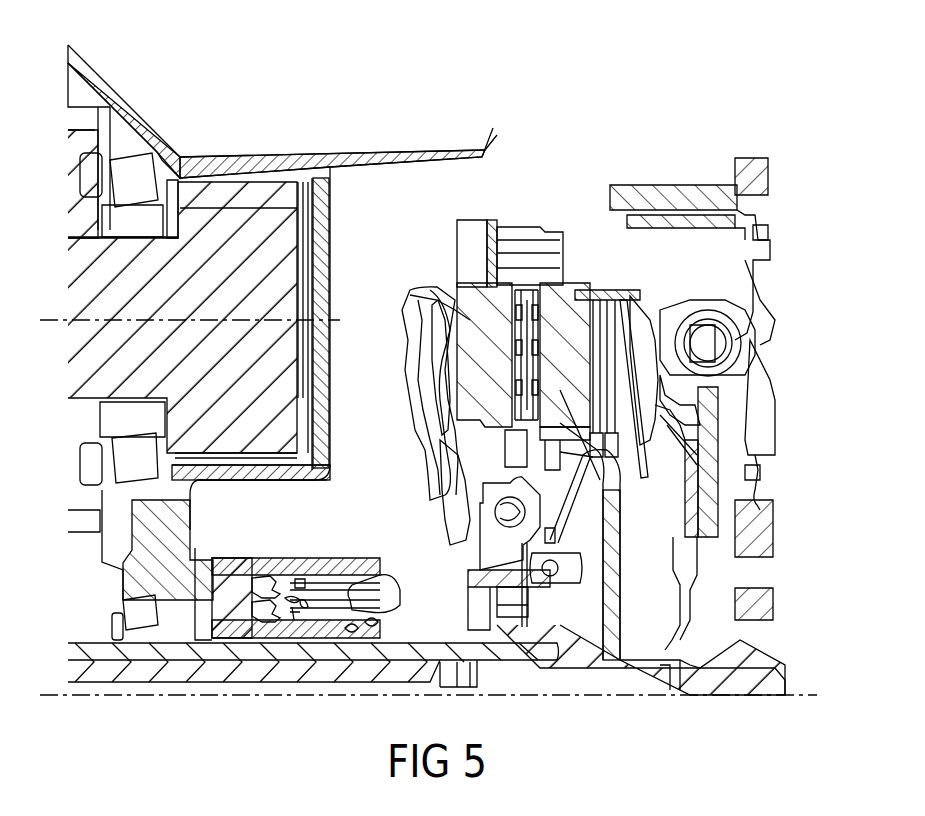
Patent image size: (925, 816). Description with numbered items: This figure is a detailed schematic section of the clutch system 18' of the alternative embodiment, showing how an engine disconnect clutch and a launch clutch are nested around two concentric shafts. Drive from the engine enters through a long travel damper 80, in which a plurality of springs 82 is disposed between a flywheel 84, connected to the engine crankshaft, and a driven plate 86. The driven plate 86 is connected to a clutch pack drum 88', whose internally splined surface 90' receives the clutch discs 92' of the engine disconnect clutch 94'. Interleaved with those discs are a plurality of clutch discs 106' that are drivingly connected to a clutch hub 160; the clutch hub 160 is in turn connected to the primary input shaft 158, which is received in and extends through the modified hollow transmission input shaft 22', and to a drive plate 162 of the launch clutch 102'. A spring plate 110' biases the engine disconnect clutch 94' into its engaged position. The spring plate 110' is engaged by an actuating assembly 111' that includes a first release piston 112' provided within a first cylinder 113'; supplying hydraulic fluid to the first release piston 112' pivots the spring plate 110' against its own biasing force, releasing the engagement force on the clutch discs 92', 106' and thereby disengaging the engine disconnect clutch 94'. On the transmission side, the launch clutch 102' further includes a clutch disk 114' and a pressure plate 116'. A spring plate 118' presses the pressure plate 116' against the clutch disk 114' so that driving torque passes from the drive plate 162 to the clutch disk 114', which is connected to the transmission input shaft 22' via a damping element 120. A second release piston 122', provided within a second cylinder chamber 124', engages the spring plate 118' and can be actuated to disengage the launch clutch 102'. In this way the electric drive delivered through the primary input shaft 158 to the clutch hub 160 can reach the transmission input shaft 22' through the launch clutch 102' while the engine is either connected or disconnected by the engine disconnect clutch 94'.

The clutch system 18' is at (729, 233).
The hollow transmission input shaft 22' is at (313, 689).
The long travel damper 80 is at (773, 315).
The springs 82 is at (720, 383).
The flywheel 84 is at (762, 423).
The driven plate 86 is at (710, 487).
The clutch pack drum 88' is at (654, 316).
The internally splined surface 90' is at (564, 309).
The clutch discs 92' is at (571, 324).
The engine disconnect clutch 94' is at (733, 248).
The launch clutch 102' is at (476, 304).
The clutch discs 106' is at (735, 338).
The spring plate 110' is at (742, 462).
The actuating assembly 111' is at (546, 588).
The first release piston 112' is at (260, 661).
The first cylinder 113' is at (391, 650).
The clutch disk 114' is at (415, 367).
The pressure plate 116' is at (447, 378).
The spring plate 118' is at (405, 416).
The damping element 120 is at (470, 513).
The second release piston 122' is at (250, 563).
The second cylinder chamber 124' is at (282, 562).
The primary input shaft 158 is at (537, 677).
The clutch hub 160 is at (610, 563).
The drive plate 162 is at (573, 347).